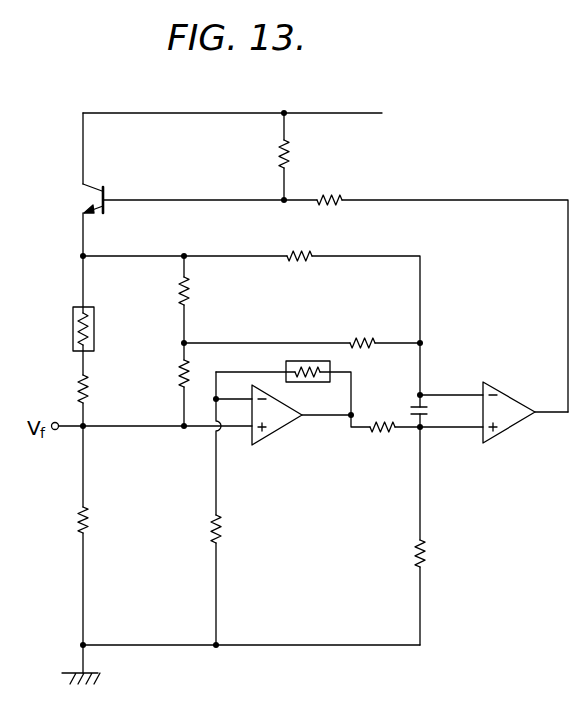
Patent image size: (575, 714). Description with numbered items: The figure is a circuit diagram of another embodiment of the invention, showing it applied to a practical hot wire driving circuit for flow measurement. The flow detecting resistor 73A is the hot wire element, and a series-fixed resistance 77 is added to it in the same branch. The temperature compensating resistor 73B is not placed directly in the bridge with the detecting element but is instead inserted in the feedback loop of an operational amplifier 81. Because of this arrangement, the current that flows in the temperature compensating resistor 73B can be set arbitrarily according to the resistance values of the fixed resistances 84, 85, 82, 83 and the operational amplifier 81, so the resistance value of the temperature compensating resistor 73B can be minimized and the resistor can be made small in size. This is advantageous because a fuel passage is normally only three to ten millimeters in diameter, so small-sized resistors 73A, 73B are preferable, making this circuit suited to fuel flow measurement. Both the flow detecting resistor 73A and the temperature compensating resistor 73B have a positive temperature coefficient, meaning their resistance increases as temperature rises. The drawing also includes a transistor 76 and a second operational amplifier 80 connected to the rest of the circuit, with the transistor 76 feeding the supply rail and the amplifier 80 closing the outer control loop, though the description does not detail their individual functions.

The transistor 76 is at (104, 190).
The fixed resistance 82 is at (180, 292).
The flow detecting resistor 73A is at (96, 328).
The series-fixed resistance 77 is at (90, 392).
The temperature compensating resistor 73B is at (308, 361).
The fixed resistance 83 is at (180, 384).
The operational amplifier 81 is at (286, 427).
The operational amplifier 80 is at (512, 426).
The fixed resistance 84 is at (90, 520).
The fixed resistance 85 is at (223, 530).